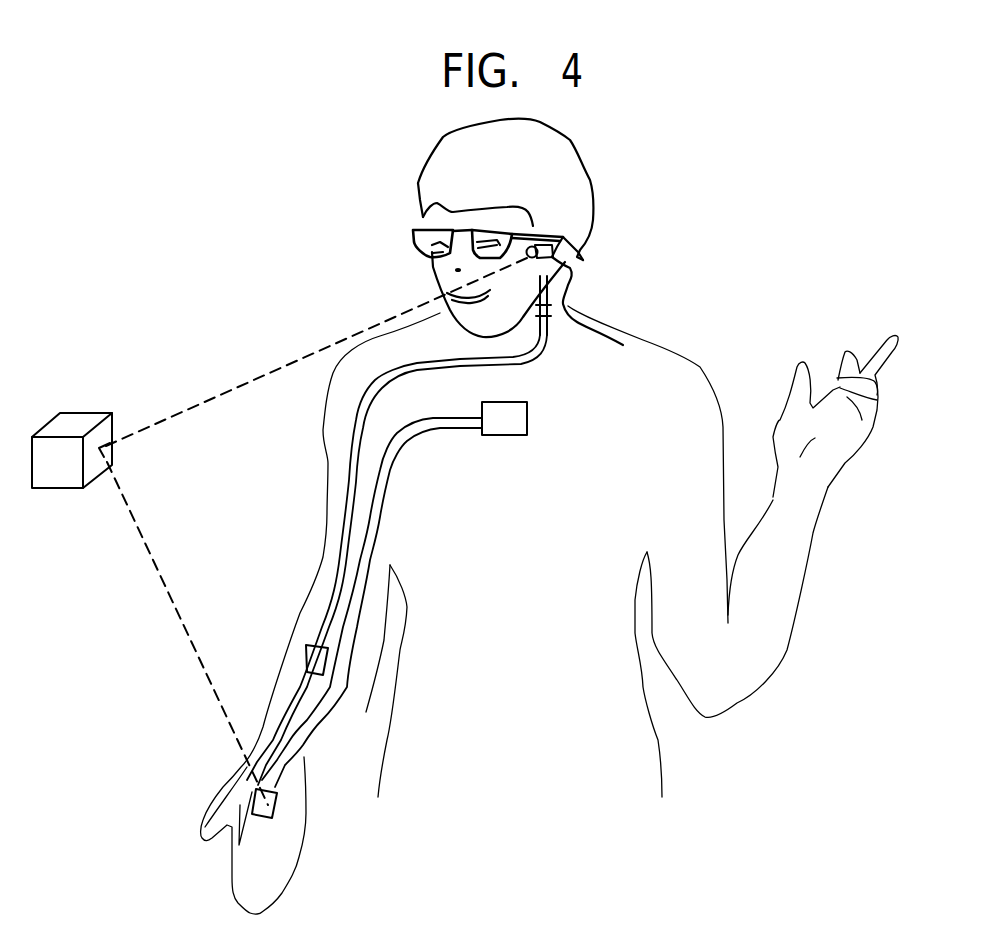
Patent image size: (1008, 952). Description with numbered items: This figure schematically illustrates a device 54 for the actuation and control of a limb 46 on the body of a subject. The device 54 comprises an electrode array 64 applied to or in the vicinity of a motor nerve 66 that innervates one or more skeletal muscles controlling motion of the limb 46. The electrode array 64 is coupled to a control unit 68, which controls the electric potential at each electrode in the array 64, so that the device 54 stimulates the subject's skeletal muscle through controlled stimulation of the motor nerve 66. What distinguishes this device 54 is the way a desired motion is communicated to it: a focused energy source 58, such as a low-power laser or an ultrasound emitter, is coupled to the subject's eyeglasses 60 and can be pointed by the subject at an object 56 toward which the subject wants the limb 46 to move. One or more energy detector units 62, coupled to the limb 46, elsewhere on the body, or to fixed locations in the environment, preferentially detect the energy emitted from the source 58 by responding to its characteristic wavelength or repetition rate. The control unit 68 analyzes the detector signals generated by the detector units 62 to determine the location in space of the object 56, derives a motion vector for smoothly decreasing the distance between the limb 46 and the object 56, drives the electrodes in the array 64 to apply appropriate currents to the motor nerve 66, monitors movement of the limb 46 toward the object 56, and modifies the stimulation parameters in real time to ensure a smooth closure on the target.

The limb 46 is at (299, 603).
The device 54 is at (158, 670).
The object 56 is at (77, 421).
The focused energy source 58 is at (557, 250).
The eyeglasses 60 is at (412, 231).
The energy detector units 62 is at (273, 803).
The electrode array 64 is at (323, 660).
The motor nerve 66 is at (287, 743).
The control unit 68 is at (518, 423).